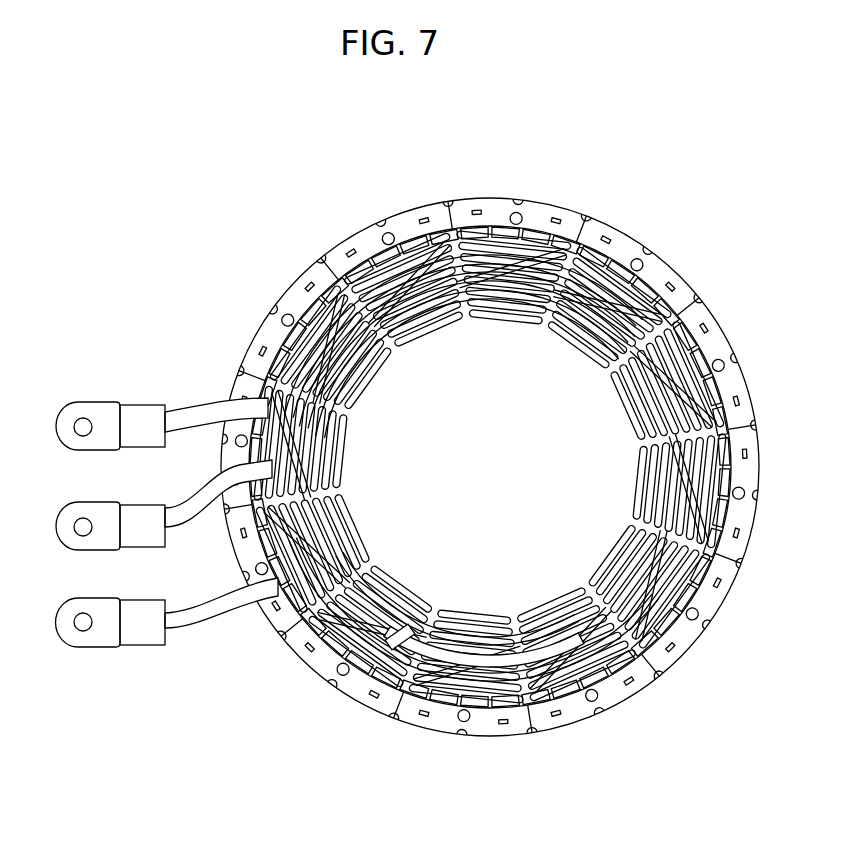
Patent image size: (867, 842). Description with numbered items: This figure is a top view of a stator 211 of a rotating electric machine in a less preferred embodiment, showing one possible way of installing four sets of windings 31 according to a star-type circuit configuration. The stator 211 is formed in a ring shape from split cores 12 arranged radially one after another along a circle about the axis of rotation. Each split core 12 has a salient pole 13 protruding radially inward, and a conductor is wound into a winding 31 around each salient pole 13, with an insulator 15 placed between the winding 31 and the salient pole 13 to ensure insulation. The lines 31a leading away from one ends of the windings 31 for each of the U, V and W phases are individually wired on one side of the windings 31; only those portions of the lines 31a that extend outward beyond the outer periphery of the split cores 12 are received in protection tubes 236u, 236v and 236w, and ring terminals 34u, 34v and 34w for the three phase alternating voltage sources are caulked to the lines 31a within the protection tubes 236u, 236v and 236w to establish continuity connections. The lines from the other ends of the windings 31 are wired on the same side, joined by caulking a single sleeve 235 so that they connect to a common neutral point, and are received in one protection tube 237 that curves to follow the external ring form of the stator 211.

The stator 211 is at (634, 137).
The split core 12 is at (729, 346).
The salient pole 13 is at (632, 407).
The insulator 15 is at (577, 330).
The winding 31 is at (637, 553).
The line 31a is at (313, 462).
The ring terminal 34u is at (68, 600).
The ring terminal 34v is at (68, 504).
The ring terminal 34w is at (68, 404).
The protection tube 236u is at (200, 634).
The protection tube 236v is at (183, 522).
The protection tube 236w is at (200, 400).
The sleeve 235 is at (420, 640).
The protection tube 237 is at (513, 662).